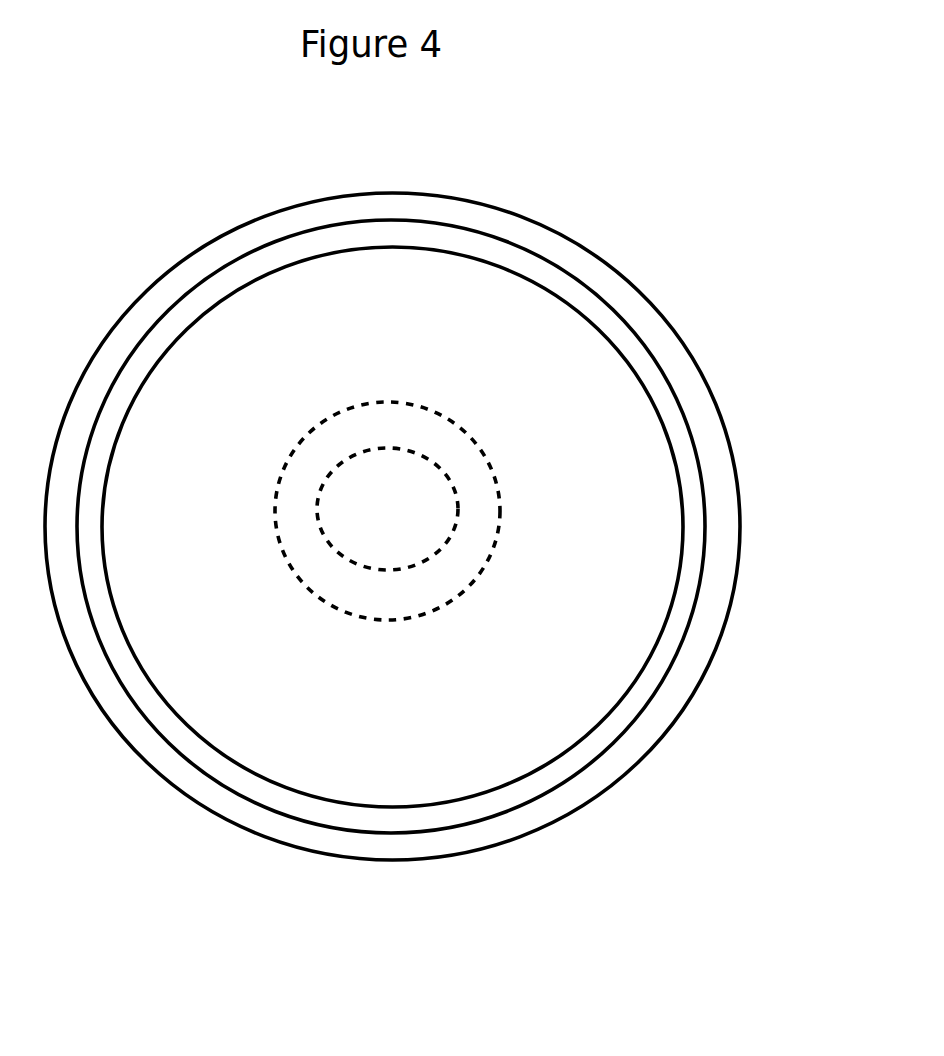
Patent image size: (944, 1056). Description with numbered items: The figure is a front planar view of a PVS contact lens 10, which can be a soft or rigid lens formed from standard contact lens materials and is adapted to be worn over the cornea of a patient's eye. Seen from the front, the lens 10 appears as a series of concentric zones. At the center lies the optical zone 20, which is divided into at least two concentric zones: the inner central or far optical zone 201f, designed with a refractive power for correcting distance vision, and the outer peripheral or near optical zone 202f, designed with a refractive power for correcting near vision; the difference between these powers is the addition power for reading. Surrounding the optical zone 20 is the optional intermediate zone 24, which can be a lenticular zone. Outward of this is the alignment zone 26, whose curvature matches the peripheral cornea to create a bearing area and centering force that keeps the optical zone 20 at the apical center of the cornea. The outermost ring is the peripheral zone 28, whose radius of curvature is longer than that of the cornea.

The PVS contact lens 10 is at (425, 543).
The optical zone 20 is at (548, 379).
The intermediate zone 24 is at (530, 672).
The alignment zone 26 is at (648, 370).
The peripheral zone 28 is at (643, 314).
The central far optical zone 201f is at (413, 506).
The peripheral near optical zone 202f is at (477, 536).